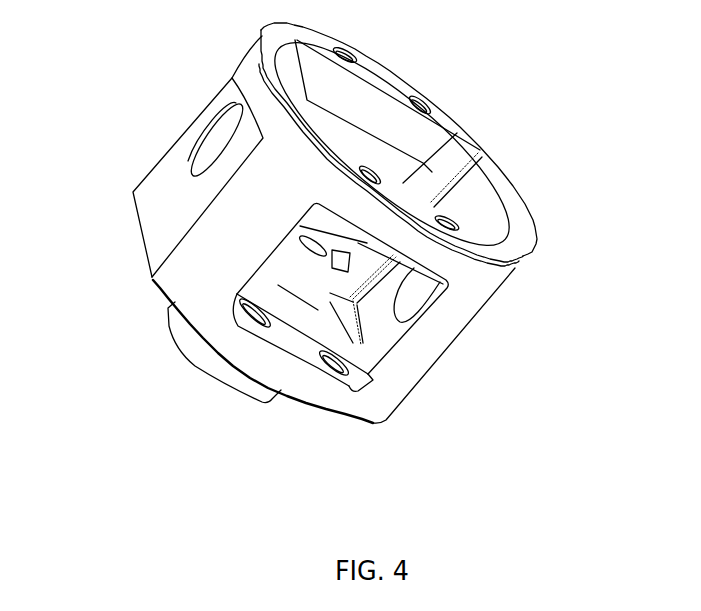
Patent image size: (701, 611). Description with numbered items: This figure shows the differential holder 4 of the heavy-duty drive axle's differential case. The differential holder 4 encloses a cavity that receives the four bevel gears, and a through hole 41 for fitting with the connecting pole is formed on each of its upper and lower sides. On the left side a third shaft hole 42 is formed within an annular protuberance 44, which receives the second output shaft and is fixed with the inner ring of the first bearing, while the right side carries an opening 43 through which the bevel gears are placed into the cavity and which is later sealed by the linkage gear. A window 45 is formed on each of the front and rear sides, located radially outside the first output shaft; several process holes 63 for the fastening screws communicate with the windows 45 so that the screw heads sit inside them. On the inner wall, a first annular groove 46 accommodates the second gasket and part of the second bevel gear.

The differential holder 4 is at (207, 277).
The through hole 41 is at (220, 157).
The third shaft hole 42 is at (267, 300).
The opening 43 is at (457, 198).
The annular protuberance 44 is at (220, 373).
The window 45 is at (360, 143).
The first annular groove 46 is at (323, 340).
The process holes 63 is at (444, 226).